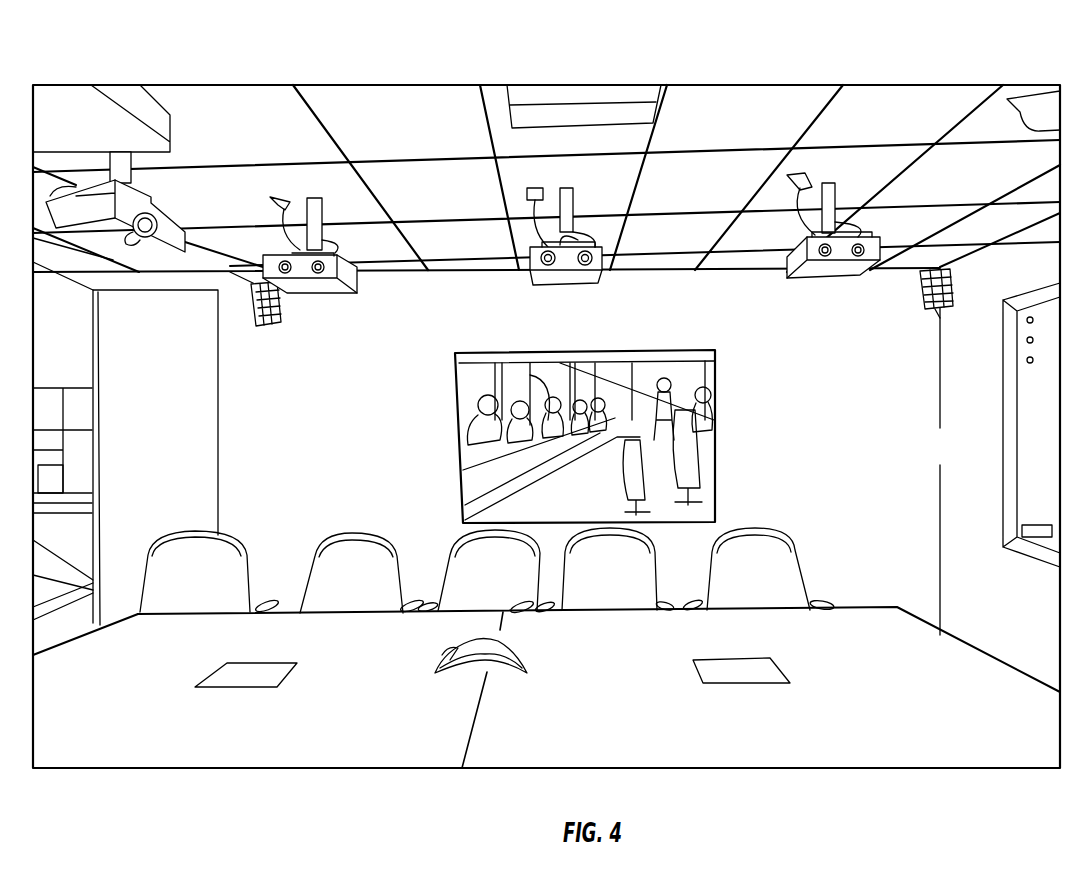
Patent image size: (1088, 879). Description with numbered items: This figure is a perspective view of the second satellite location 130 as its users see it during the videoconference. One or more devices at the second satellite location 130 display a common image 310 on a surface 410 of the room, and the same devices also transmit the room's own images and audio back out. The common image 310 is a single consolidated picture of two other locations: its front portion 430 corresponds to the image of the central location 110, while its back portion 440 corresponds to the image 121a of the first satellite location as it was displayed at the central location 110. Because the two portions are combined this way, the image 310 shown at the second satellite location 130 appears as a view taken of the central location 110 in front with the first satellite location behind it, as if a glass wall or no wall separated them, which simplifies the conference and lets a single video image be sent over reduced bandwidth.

The common image 310 is at (705, 74).
The second satellite location 130 is at (318, 775).
The central location 110 is at (650, 677).
The front portion of the common image 430 is at (372, 652).
The back portion of the common image 440 is at (400, 436).
The surface 410 is at (962, 460).
The image of the first satellite location 121a is at (701, 356).